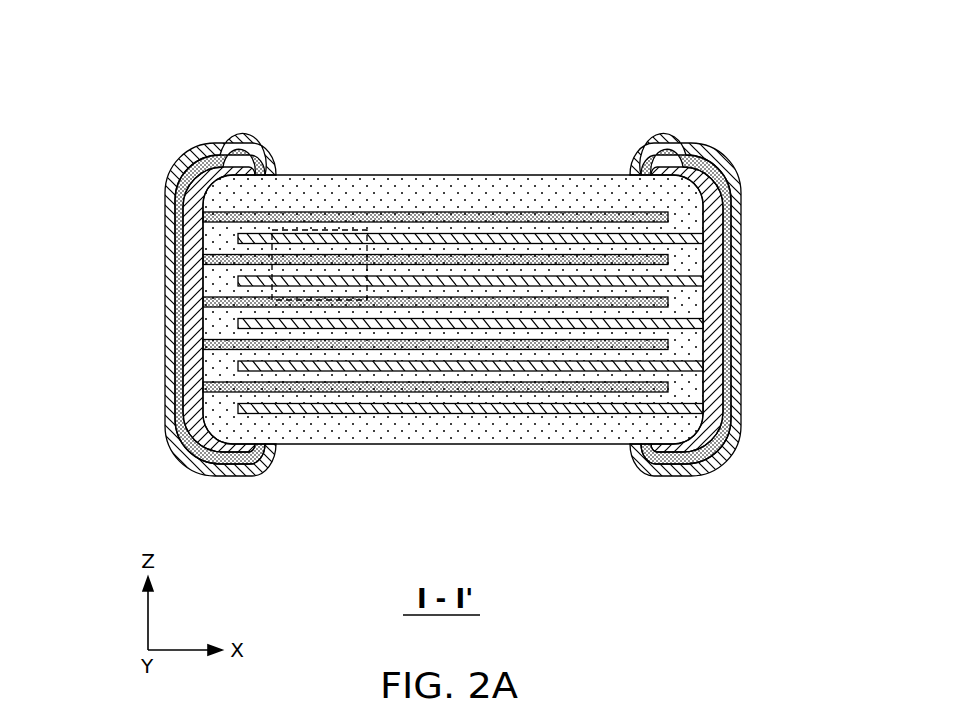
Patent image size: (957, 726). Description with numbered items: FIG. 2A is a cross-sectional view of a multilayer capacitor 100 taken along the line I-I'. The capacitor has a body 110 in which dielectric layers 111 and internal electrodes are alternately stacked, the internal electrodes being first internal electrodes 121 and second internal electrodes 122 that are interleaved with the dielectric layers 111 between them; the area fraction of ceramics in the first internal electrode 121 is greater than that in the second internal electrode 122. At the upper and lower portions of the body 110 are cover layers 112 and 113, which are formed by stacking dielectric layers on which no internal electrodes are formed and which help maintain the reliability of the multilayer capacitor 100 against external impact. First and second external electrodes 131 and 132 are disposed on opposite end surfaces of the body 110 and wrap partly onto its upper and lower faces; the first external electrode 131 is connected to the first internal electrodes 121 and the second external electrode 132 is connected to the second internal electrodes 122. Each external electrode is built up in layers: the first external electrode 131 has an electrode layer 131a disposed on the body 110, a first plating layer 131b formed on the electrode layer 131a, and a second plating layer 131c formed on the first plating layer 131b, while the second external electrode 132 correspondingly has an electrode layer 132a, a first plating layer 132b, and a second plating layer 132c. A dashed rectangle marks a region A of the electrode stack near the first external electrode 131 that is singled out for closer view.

The multilayer capacitor 100 is at (170, 42).
The body 110 is at (517, 309).
The dielectric layers 111 is at (690, 250).
The cover layer 112 is at (553, 183).
The cover layer 113 is at (505, 430).
The first internal electrode 121 is at (418, 215).
The second internal electrode 122 is at (482, 238).
The first external electrode 131 is at (150, 304).
The electrode layer 131a is at (190, 274).
The first plating layer 131b is at (180, 313).
The second plating layer 131c is at (80, 258).
The second external electrode 132 is at (765, 304).
The electrode layer 132a is at (720, 280).
The first plating layer 132b is at (728, 320).
The second plating layer 132c is at (842, 270).
The region A is at (312, 230).